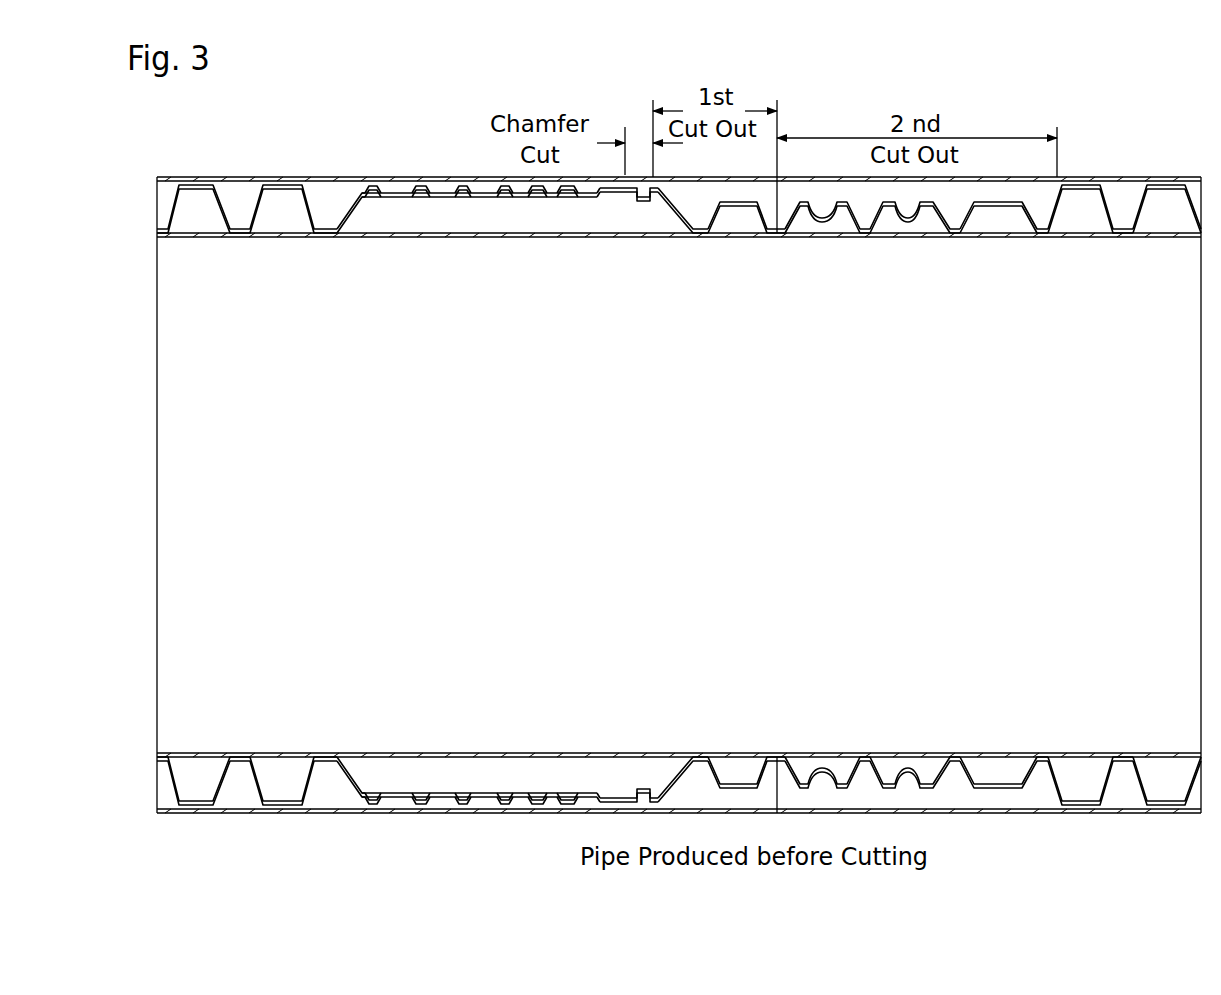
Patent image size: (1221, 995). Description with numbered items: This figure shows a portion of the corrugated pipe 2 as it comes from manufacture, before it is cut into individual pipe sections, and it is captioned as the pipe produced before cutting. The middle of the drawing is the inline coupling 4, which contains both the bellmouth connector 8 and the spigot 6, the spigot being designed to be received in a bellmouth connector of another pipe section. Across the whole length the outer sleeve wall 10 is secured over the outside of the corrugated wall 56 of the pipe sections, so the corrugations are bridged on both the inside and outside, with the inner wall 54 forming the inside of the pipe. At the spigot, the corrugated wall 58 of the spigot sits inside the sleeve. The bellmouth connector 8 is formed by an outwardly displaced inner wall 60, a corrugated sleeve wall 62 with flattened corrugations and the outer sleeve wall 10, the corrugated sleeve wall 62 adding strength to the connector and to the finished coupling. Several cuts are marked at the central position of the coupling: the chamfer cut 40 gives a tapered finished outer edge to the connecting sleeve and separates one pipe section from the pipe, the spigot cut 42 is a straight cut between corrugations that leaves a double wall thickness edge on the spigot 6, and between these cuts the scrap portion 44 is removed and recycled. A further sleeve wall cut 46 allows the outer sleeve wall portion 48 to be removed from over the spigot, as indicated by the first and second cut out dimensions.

The corrugated pipe 2 is at (1031, 100).
The inline coupling 4 is at (464, 107).
The spigot 6 is at (946, 241).
The bellmouth connector 8 is at (484, 206).
The outer sleeve wall 10 is at (255, 172).
The chamfer cut 40 is at (623, 186).
The spigot cut 42 is at (783, 238).
The scrap portion 44 is at (780, 254).
The sleeve wall cut 46 is at (1065, 178).
The outer sleeve wall portion 48 is at (862, 178).
The inner wall 54 is at (213, 237).
The corrugated wall 56 is at (1143, 210).
The corrugated wall of the spigot 58 is at (885, 223).
The outwardly displaced inner wall 60 is at (503, 197).
The corrugated sleeve wall 62 is at (436, 186).